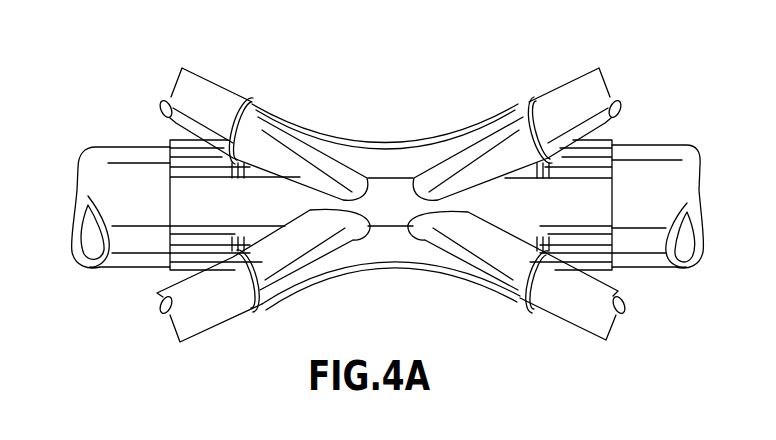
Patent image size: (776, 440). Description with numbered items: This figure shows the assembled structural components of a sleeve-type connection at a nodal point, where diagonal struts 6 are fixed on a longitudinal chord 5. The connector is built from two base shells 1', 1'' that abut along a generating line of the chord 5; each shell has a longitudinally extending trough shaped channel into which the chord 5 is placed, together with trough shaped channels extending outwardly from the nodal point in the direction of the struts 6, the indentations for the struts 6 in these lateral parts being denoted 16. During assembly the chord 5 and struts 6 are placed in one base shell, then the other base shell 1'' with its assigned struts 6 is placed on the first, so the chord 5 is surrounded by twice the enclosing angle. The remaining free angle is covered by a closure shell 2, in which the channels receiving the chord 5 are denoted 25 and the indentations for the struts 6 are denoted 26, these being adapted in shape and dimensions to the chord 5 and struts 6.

The closure shell 2 is at (177, 217).
The base shell 1' is at (643, 125).
The base shell 1'' is at (658, 273).
The chord 5 is at (676, 160).
The strut 6 is at (603, 80).
The indentation for the struts 16 is at (268, 103).
The channel for the chord 25 is at (168, 186).
The indentation for the struts 26 is at (242, 130).